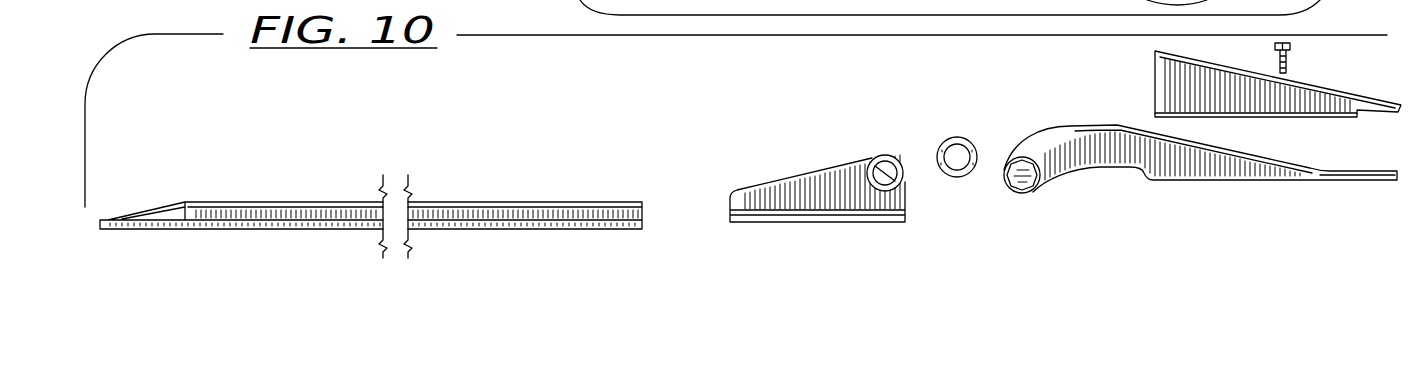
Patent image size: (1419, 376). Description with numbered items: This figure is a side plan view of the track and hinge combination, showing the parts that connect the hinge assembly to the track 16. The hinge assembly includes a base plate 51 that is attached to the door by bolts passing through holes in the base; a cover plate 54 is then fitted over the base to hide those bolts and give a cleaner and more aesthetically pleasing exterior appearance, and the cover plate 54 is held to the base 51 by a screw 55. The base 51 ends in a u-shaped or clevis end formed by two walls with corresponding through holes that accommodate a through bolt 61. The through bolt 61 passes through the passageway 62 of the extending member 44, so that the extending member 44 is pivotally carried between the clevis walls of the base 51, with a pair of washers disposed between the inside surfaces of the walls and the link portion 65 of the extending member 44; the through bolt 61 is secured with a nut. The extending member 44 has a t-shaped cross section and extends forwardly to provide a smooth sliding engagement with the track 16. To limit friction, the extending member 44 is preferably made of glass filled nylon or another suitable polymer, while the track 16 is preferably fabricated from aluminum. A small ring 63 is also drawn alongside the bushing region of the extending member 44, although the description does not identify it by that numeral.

The track 16 is at (315, 201).
The extending member 44 is at (811, 172).
The passageway 62 is at (868, 160).
The link portion 65 is at (898, 160).
The ring 63 is at (950, 178).
The base plate 51 is at (1103, 167).
The through bolt 61 is at (1022, 177).
The cover plate 54 is at (1215, 63).
The screw 55 is at (1290, 58).